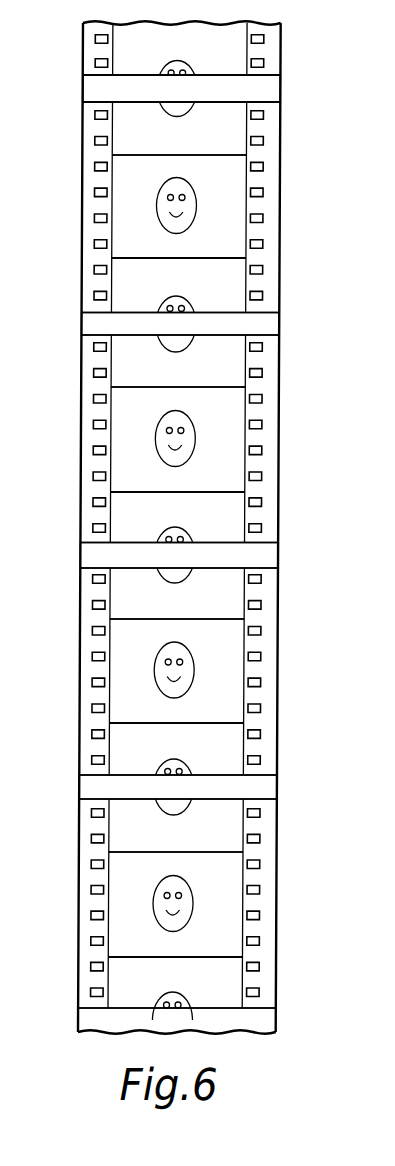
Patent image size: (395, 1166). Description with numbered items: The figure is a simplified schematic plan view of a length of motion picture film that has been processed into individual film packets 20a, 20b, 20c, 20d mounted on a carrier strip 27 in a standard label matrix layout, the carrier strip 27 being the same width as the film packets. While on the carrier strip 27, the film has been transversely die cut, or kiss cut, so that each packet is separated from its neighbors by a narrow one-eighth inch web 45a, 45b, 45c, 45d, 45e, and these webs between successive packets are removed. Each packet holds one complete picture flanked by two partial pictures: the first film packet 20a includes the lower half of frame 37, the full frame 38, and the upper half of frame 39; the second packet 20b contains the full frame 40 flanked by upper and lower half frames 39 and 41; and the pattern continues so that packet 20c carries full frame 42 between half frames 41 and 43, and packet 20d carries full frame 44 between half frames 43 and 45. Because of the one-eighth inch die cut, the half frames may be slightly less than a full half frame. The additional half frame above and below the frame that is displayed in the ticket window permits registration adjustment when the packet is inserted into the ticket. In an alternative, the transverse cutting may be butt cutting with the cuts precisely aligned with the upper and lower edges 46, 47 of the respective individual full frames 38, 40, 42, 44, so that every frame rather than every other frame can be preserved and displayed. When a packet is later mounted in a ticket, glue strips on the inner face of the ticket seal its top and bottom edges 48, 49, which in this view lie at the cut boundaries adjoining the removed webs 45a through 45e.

The film packet 20a is at (265, 212).
The film packet 20b is at (215, 439).
The film packet 20c is at (265, 669).
The film packet 20d is at (263, 905).
The carrier strip 27 is at (266, 87).
The frame 37 is at (234, 63).
The frame 38 is at (233, 244).
The frame 39 is at (233, 297).
The frame 40 is at (232, 477).
The frame 41 is at (232, 530).
The frame 42 is at (232, 709).
The frame 43 is at (232, 759).
The frame 44 is at (234, 944).
The frame 45 is at (234, 997).
The web 45a is at (99, 86).
The web 45b is at (99, 322).
The web 45c is at (99, 553).
The web 45d is at (99, 784).
The web 45e is at (100, 1018).
The upper edge of frame 46 is at (198, 157).
The lower edge of frame 47 is at (126, 257).
The top edge of packet 48 is at (128, 94).
The bottom edge of packet 49 is at (136, 78).